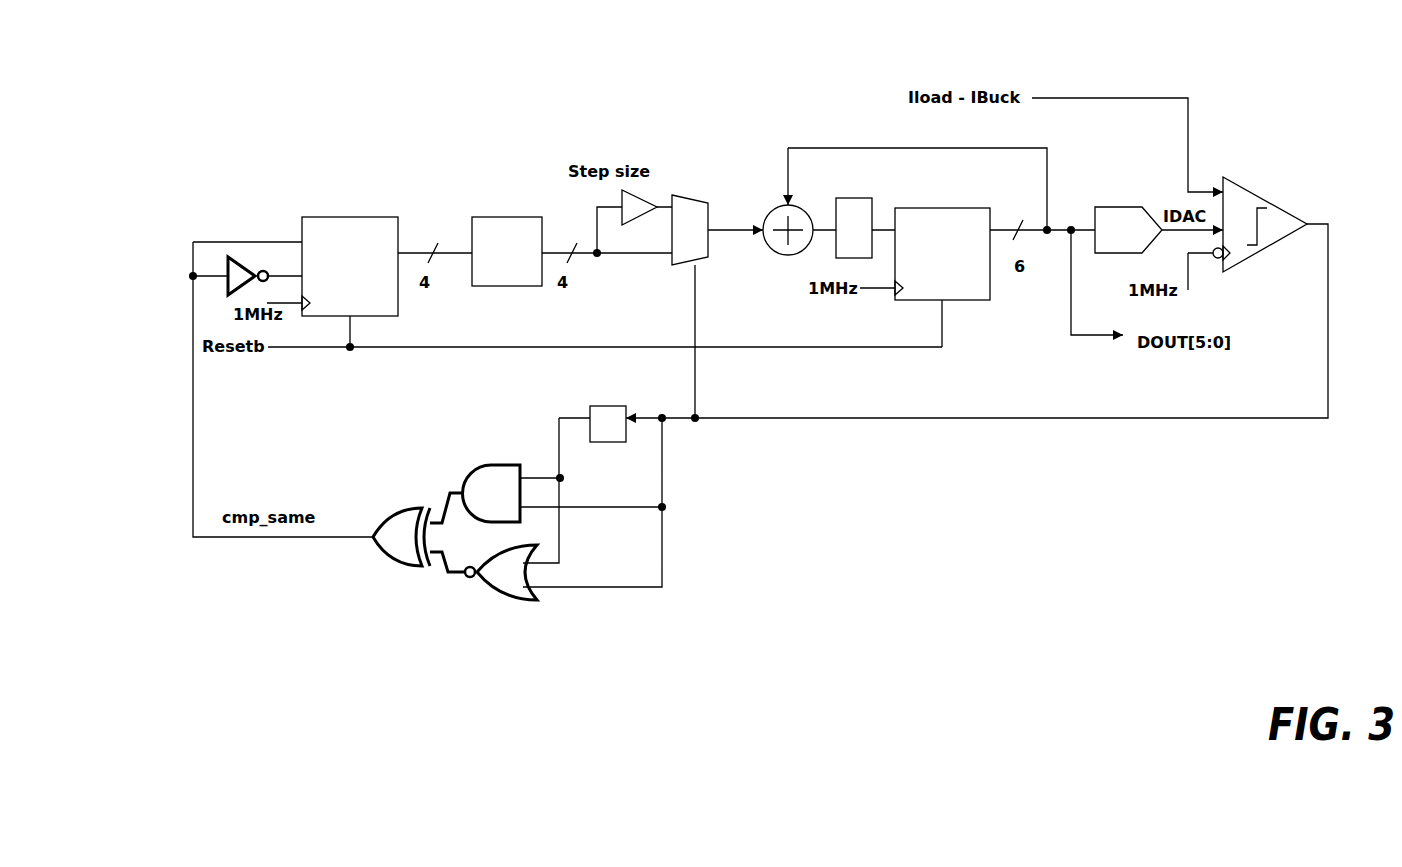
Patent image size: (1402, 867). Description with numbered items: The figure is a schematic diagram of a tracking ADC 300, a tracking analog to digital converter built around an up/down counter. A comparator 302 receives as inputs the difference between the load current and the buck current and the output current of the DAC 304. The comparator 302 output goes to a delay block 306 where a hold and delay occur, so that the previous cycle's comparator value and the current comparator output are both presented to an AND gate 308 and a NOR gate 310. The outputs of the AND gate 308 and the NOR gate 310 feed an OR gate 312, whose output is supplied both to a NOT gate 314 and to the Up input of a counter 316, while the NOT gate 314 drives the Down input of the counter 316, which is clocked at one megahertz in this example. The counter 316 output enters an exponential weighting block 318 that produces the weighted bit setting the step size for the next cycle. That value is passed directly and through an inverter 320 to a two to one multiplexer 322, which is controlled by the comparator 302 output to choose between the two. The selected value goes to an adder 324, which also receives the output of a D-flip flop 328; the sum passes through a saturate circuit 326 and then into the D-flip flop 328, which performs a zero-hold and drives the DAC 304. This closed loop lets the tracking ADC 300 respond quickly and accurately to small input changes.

The tracking ADC 300 is at (127, 86).
The comparator 302 is at (1268, 200).
The DAC 304 is at (1122, 207).
The z^-1 block 306 is at (610, 406).
The AND gate 308 is at (480, 466).
The NOR gate 310 is at (520, 608).
The OR gate 312 is at (390, 563).
The NOT gate 314 is at (230, 256).
The counter 316 is at (327, 216).
The y=2^x block 318 is at (473, 216).
The inverter 320 is at (640, 192).
The two to one multiplexer 322 is at (708, 258).
The adder 324 is at (773, 213).
The saturate circuit 326 is at (845, 198).
The D-flip flop 328 is at (940, 208).